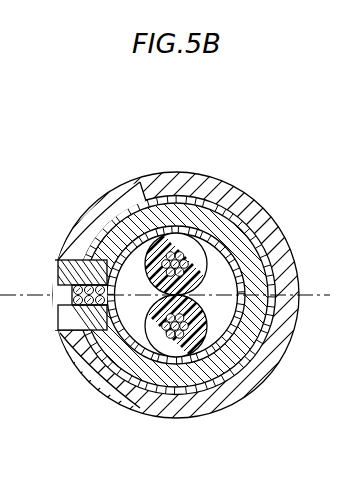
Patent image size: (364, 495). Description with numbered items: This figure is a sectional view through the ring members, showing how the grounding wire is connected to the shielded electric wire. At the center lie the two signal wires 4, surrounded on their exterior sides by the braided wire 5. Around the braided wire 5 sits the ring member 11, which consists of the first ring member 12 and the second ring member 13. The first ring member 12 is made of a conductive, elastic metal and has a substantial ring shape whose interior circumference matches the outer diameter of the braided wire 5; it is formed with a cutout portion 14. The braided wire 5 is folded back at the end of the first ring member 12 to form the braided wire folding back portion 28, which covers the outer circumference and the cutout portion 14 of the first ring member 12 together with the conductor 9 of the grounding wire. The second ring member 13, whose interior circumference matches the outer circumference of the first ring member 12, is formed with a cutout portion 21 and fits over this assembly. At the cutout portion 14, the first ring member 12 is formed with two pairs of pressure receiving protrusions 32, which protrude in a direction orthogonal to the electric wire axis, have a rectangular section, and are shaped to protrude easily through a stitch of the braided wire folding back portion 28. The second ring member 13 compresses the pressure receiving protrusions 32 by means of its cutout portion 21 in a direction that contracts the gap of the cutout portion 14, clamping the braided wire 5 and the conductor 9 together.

The signal wire 4 is at (243, 226).
The braided wire 5 is at (206, 357).
The conductor 9 is at (78, 260).
The ring member 11 is at (182, 281).
The first ring member 12 is at (177, 208).
The second ring member 13 is at (210, 198).
The cutout portion 14 is at (100, 365).
The cutout portion 21 is at (62, 330).
The braided wire folding back portion 28 is at (257, 347).
The pressure receiving protrusion 32 is at (58, 270).